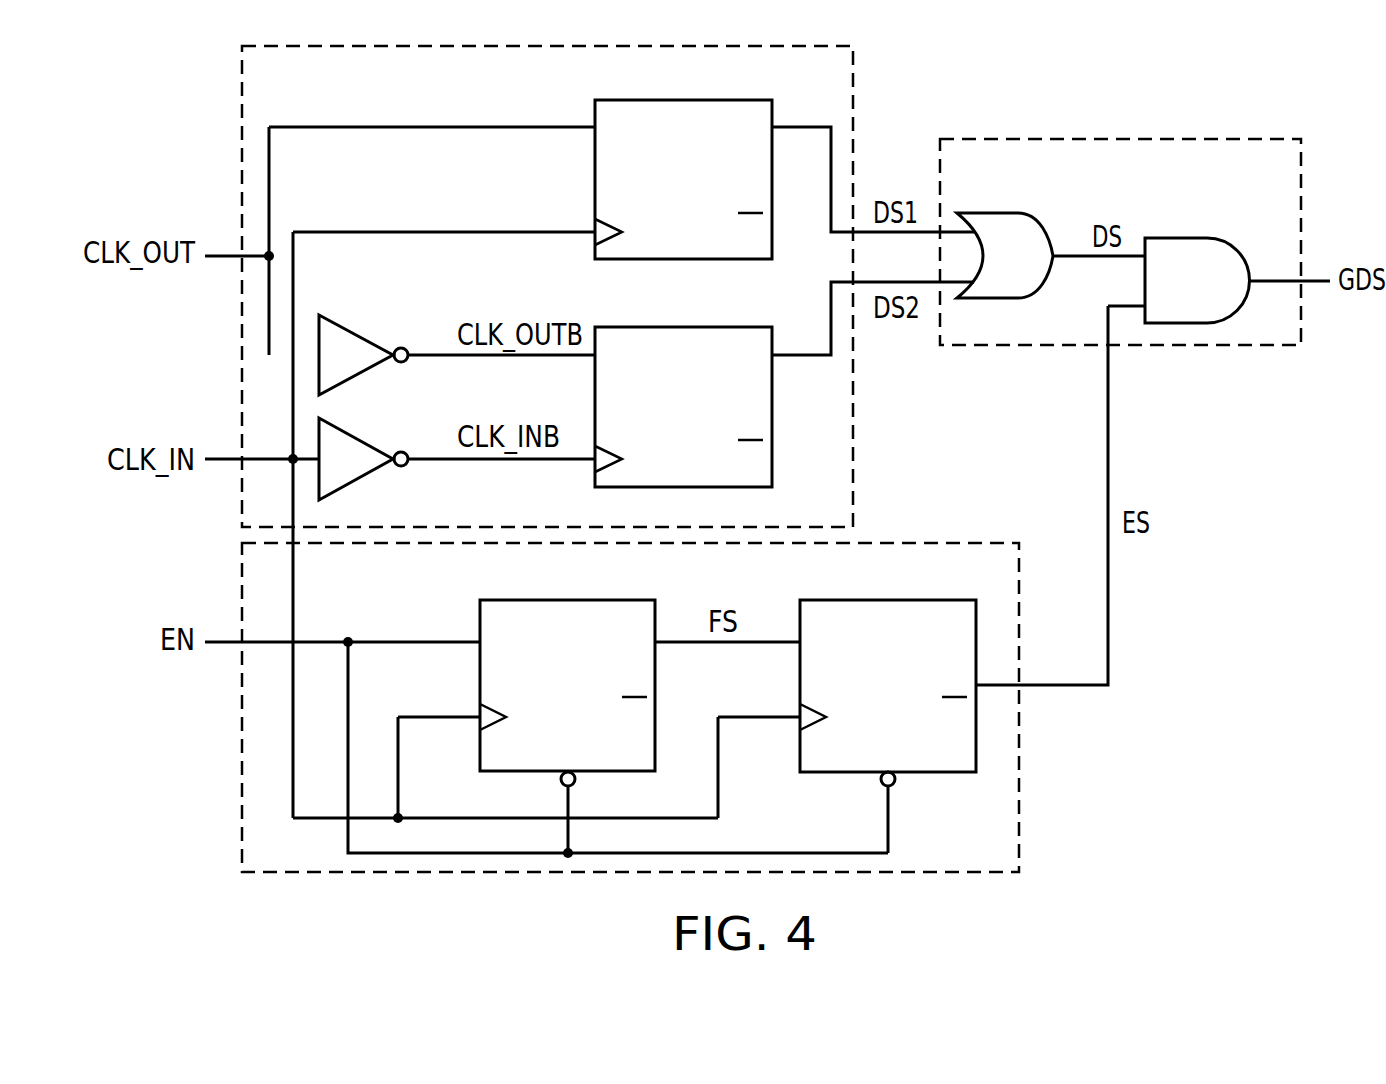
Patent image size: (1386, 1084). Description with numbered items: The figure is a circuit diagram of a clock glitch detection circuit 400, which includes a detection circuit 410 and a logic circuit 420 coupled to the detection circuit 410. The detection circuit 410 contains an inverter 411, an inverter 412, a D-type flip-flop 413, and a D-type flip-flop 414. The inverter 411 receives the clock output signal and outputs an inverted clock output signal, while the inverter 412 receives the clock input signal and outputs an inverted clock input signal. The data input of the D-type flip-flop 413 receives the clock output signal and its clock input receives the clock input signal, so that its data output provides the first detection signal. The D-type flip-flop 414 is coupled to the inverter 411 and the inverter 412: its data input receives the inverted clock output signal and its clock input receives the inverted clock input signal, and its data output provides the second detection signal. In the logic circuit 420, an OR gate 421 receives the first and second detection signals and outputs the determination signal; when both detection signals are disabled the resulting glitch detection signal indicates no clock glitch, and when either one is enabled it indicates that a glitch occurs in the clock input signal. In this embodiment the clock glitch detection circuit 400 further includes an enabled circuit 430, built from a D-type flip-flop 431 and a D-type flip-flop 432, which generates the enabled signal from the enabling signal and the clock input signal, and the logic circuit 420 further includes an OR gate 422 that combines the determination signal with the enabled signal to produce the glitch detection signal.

The clock glitch detection circuit 400 is at (1356, 888).
The detection circuit 410 is at (242, 118).
The inverter 411 is at (362, 333).
The inverter 412 is at (362, 480).
The D-type flip-flop 413 is at (728, 98).
The D-type flip-flop 414 is at (728, 326).
The logic circuit 420 is at (1207, 137).
The OR gate 421 is at (1045, 228).
The OR gate 422 is at (1233, 253).
The enabled circuit 430 is at (242, 772).
The D-type flip-flop 431 is at (613, 598).
The D-type flip-flop 432 is at (933, 598).